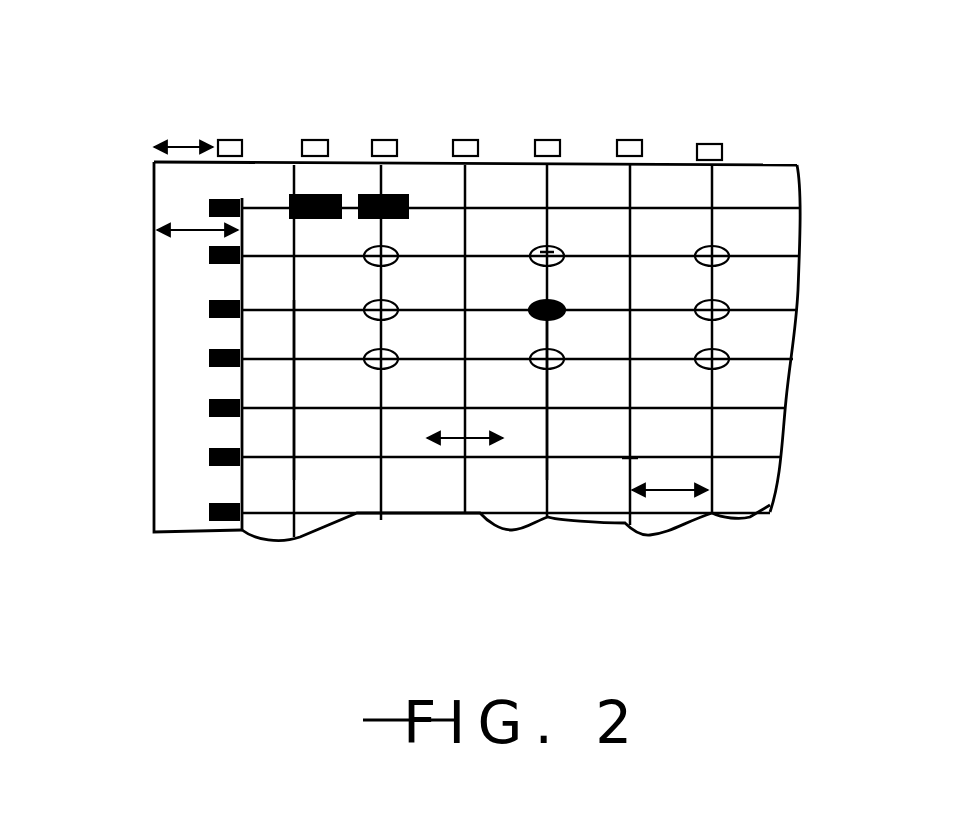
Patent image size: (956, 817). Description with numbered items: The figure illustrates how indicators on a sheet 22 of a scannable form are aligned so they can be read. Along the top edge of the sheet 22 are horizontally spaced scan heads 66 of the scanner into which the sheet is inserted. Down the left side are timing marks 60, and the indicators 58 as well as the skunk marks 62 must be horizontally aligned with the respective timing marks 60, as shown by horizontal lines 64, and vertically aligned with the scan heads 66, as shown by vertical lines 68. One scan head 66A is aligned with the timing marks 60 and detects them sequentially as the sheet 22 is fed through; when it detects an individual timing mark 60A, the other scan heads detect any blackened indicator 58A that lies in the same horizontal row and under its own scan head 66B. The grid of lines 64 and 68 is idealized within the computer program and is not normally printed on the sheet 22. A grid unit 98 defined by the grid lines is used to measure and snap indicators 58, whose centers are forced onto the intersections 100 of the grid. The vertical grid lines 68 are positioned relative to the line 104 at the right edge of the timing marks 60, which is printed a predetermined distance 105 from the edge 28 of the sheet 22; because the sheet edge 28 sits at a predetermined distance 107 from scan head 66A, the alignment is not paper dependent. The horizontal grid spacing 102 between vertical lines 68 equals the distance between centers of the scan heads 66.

The sheet 22 is at (752, 165).
The edge of the sheet 28 is at (150, 477).
The indicators 58 is at (383, 300).
The blackened indicator 58A is at (572, 294).
The timing marks 60 is at (210, 405).
The individual timing mark 60A is at (210, 253).
The skunk marks 62 is at (390, 192).
The horizontal lines 64 is at (757, 314).
The scan heads 66 is at (710, 144).
The scan head aligned with timing marks 66A is at (228, 140).
The scan head 66B is at (545, 140).
The vertical lines 68 is at (715, 440).
The grid unit 98 is at (548, 545).
The intersection 100 is at (630, 458).
The horizontal grid spacing 102 is at (665, 547).
The line of the right edge of the timing marks 104 is at (240, 282).
The predetermined distance 105 is at (188, 220).
The predetermined distance 107 is at (191, 145).